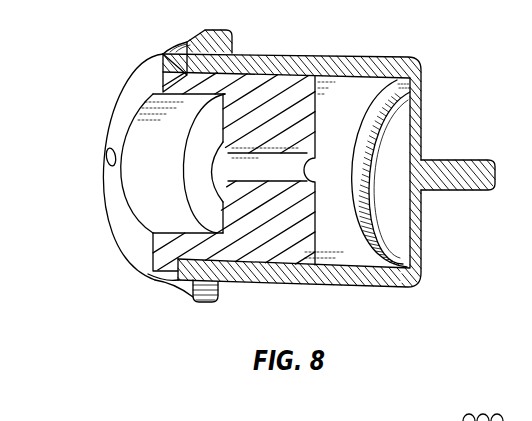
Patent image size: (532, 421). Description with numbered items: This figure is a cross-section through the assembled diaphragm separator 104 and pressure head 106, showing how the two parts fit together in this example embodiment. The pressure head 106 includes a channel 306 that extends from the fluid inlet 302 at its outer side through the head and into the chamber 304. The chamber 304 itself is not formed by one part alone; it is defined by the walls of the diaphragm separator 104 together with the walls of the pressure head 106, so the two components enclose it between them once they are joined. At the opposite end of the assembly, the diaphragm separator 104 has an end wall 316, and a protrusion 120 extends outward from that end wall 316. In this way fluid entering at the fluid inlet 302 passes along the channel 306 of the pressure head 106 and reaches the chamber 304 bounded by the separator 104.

The diaphragm separator 104 is at (386, 57).
The pressure head 106 is at (130, 84).
The protrusion 120 is at (468, 160).
The fluid inlet 302 is at (124, 130).
The chamber 304 is at (365, 268).
The channel 306 is at (293, 72).
The end wall 316 is at (403, 217).